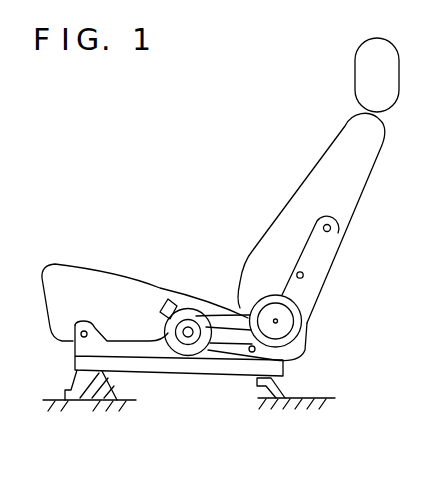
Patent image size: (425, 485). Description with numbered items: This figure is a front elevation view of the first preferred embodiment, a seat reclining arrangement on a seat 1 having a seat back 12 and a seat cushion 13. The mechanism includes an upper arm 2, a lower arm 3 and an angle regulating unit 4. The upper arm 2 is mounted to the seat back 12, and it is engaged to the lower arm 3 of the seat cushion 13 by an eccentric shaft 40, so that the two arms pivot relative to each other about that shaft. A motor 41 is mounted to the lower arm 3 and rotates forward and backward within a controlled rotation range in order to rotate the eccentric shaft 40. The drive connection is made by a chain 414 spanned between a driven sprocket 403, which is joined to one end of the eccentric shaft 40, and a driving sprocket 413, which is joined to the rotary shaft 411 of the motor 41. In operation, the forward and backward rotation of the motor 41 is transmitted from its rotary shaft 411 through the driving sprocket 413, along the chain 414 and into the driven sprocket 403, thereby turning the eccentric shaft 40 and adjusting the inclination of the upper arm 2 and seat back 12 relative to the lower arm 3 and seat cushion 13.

The seat 1 is at (223, 264).
The seat back 12 is at (367, 165).
The seat cushion 13 is at (64, 263).
The upper arm 2 is at (323, 245).
The lower arm 3 is at (274, 354).
The angle regulating unit 4 is at (318, 326).
The eccentric shaft 40 is at (278, 319).
The driven sprocket 403 is at (292, 341).
The motor 41 is at (160, 309).
The rotary shaft 411 is at (186, 338).
The driving sprocket 413 is at (194, 344).
The chain 414 is at (218, 312).